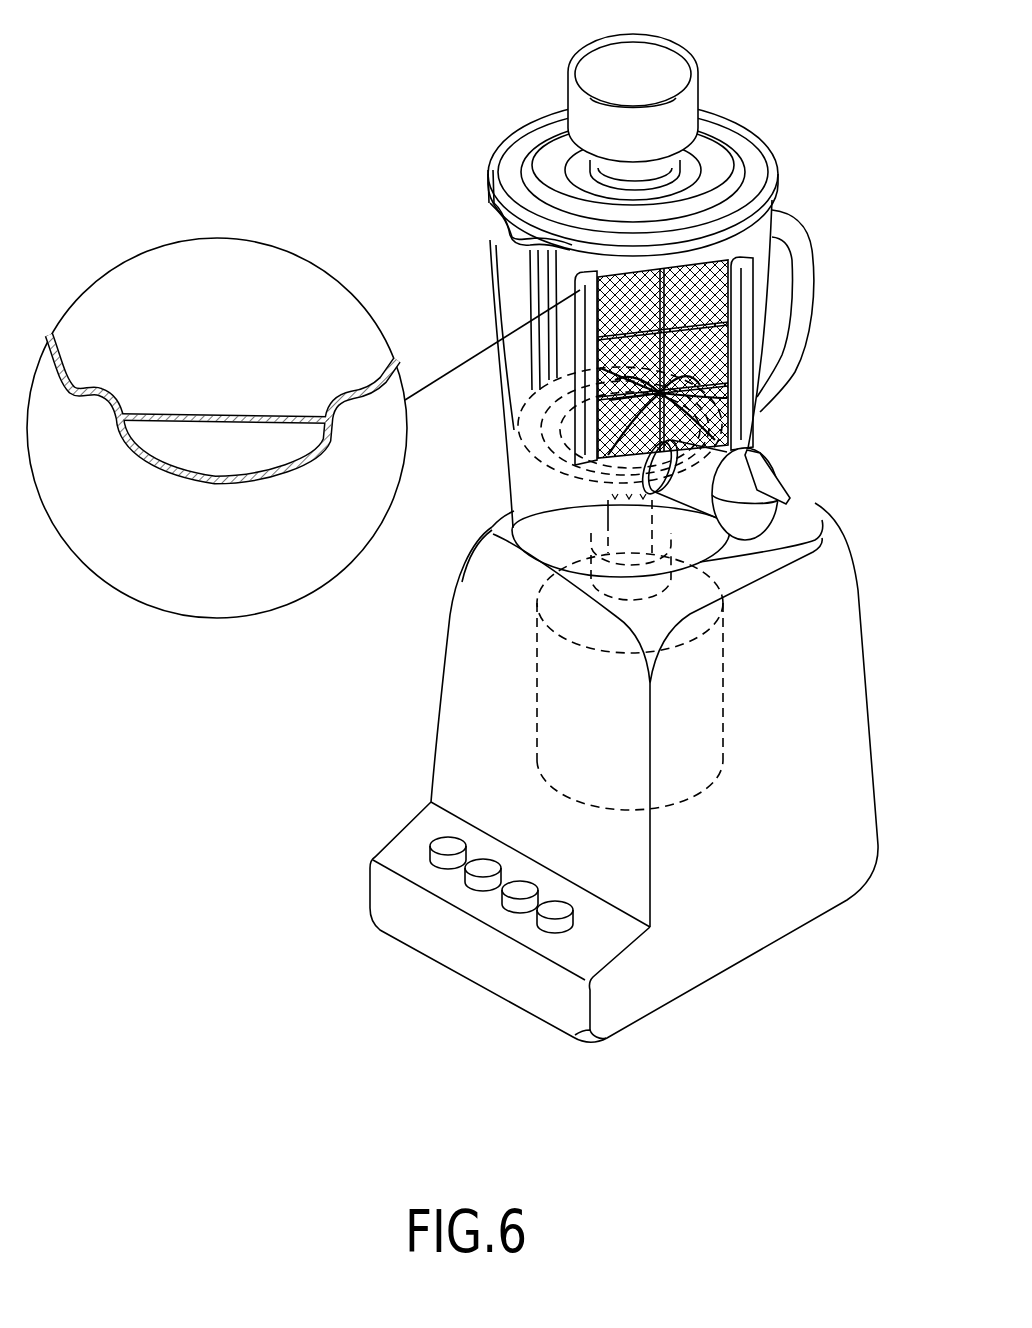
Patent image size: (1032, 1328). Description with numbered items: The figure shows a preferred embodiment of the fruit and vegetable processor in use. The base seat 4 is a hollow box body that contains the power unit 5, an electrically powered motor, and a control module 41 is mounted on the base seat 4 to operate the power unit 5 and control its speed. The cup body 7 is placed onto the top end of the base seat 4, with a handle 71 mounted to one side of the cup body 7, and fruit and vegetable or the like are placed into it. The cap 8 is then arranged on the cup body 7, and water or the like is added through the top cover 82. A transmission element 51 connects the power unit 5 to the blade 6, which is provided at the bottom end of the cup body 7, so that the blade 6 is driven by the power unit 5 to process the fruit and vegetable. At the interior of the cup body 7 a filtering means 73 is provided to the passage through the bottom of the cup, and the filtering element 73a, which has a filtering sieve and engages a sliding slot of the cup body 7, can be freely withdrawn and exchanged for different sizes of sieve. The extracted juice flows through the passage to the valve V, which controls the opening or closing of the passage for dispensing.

The top cover 82 is at (697, 63).
The cap 8 is at (745, 150).
The handle 71 is at (813, 280).
The filtering means 73 is at (257, 412).
The filtering element 73a is at (713, 328).
The cup body 7 is at (257, 480).
The blade 6 is at (730, 413).
The valve V is at (790, 480).
The transmission element 51 is at (620, 527).
The power unit 5 is at (549, 693).
The base seat 4 is at (852, 692).
The control module 41 is at (440, 843).